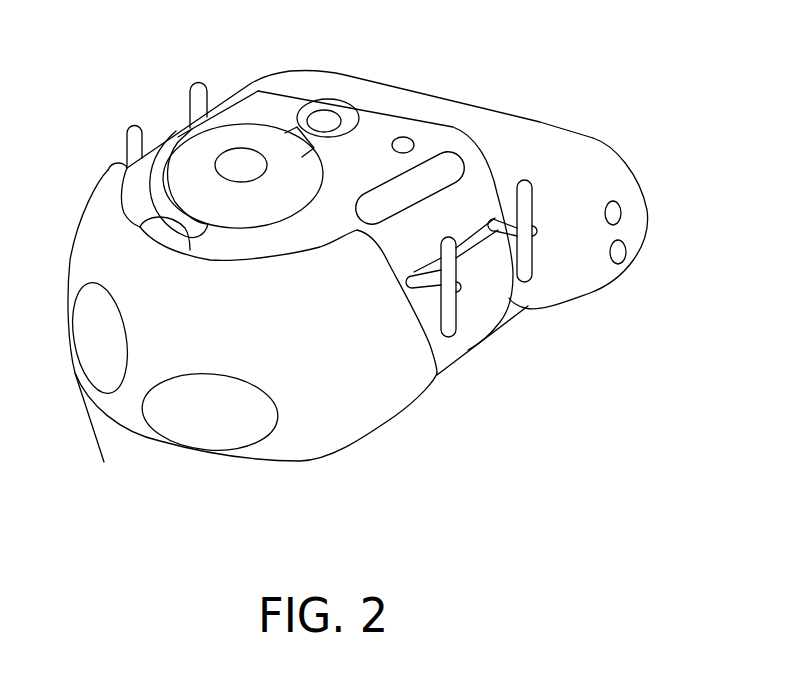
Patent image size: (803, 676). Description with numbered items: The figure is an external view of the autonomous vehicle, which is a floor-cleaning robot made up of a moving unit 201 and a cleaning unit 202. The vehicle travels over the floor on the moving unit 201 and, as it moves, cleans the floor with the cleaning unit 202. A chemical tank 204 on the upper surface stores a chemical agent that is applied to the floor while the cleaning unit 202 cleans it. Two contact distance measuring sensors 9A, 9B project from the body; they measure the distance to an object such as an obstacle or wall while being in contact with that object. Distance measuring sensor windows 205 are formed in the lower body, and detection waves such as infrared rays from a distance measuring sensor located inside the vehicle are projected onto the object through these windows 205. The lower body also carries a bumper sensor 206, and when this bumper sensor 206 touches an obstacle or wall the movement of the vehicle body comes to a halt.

The moving unit 201 is at (380, 130).
The cleaning unit 202 is at (563, 163).
The chemical tank 204 is at (190, 167).
The distance measuring sensor windows 205 is at (187, 420).
The bumper sensor 206 is at (337, 433).
The contact distance measuring sensor 9A is at (456, 315).
The contact distance measuring sensor 9B is at (533, 257).